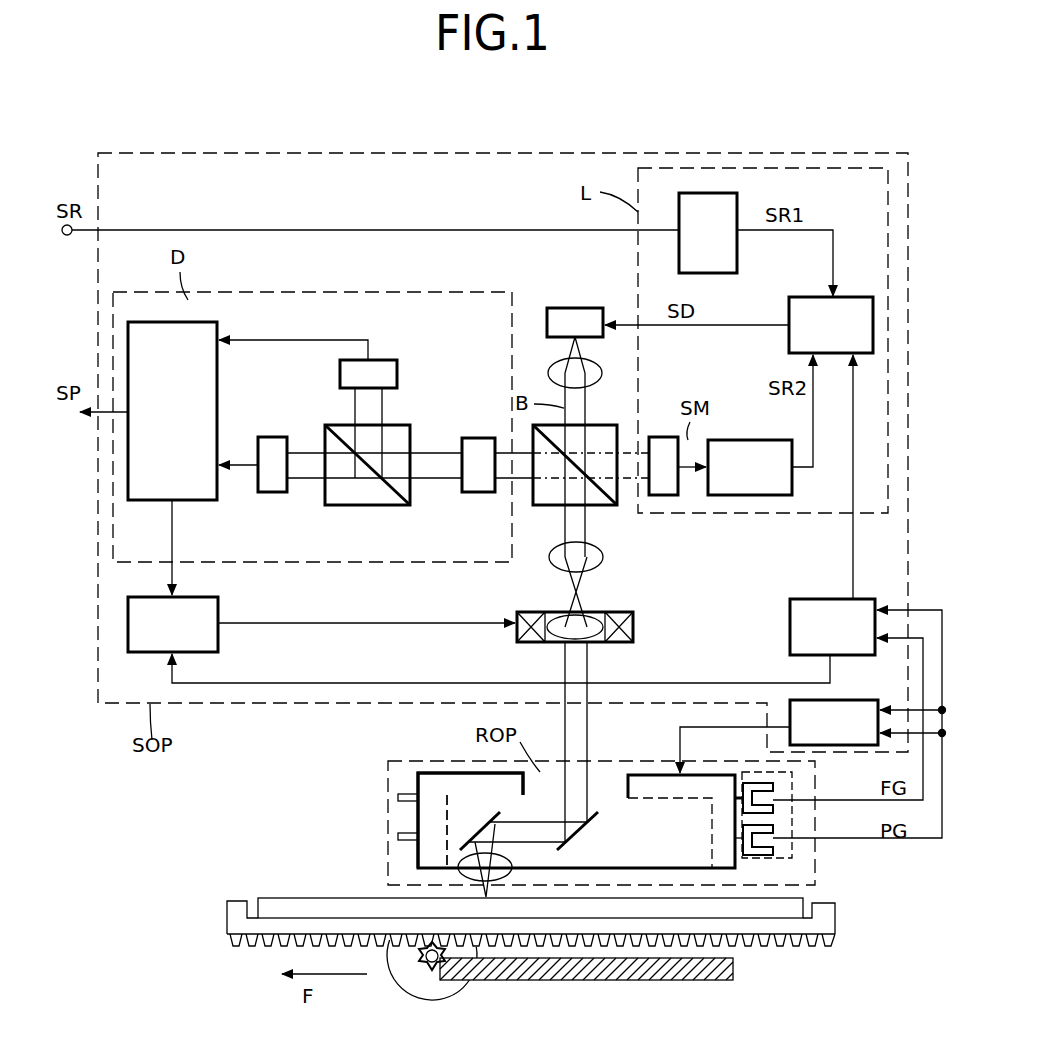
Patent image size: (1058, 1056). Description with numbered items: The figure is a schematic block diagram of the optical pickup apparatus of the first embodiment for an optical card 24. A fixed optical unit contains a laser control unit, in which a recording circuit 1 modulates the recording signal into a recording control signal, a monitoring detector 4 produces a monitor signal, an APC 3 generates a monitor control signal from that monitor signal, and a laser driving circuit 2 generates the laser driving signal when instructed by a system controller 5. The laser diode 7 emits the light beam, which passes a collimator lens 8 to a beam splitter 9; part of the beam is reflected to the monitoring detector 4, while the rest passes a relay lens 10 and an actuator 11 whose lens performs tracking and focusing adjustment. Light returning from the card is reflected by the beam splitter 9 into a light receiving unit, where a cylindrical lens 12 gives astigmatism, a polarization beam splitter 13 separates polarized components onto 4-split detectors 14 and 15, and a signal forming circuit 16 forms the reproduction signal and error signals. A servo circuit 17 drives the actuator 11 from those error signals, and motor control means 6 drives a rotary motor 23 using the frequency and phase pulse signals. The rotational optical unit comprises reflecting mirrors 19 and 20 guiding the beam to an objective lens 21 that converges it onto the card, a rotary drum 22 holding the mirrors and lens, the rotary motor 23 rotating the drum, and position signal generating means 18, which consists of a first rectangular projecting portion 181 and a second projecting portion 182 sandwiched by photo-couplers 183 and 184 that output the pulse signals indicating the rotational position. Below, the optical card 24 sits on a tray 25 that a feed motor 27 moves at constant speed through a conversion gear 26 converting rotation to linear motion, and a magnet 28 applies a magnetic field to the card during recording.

The recording circuit 1 is at (737, 208).
The laser driving circuit 2 is at (855, 297).
The APC (Auto Power Controller) 3 is at (740, 440).
The monitoring detector 4 is at (663, 437).
The system controller 5 is at (815, 599).
The motor control means 6 is at (860, 700).
The laser diode 7 is at (580, 308).
The collimator lens 8 is at (553, 368).
The beam splitter 9 is at (610, 425).
The relay lens 10 is at (603, 557).
The actuator 11 is at (517, 612).
The cylindrical lens 12 is at (478, 492).
The polarization beam splitter (PBS) 13 is at (360, 505).
The 4-split detector 14 is at (282, 437).
The 4-split detector 15 is at (386, 362).
The signal forming circuit 16 is at (218, 390).
The servo circuit 17 is at (218, 608).
The position signal generating means 18 is at (793, 856).
The reflecting mirror 19 is at (590, 825).
The reflecting mirror 20 is at (472, 838).
The objective lens 21 is at (505, 866).
The rotary drum 22 is at (437, 850).
The rotary motor 23 is at (435, 775).
The optical card 24 is at (278, 898).
The tray 25 is at (227, 915).
The conversion gear 26 is at (283, 948).
The feed motor 27 is at (412, 985).
The magnet MG 28 is at (510, 980).
The first rectangular projecting portion 181 is at (398, 797).
The second projecting portion 182 is at (398, 837).
The photo-coupler 183 is at (773, 790).
The photo-coupler 184 is at (773, 832).